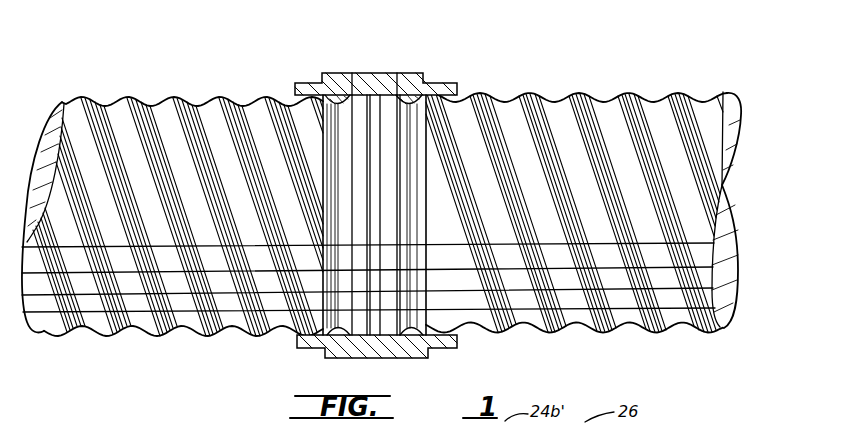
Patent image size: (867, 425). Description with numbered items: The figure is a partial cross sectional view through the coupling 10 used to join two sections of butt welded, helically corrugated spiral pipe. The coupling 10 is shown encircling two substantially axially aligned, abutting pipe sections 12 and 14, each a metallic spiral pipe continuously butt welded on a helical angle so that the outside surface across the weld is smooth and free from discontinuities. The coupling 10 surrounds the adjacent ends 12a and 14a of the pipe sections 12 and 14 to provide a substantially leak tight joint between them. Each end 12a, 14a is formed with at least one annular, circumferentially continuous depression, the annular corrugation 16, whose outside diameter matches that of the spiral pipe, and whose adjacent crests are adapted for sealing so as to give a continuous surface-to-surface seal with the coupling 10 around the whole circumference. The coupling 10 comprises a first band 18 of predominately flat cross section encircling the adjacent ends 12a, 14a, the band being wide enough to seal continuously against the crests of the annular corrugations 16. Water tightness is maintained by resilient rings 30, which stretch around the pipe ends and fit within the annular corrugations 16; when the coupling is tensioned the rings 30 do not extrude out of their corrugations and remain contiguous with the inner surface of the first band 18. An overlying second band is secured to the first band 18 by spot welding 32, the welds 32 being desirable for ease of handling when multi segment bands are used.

The coupling 10 is at (390, 56).
The pipe section 12 is at (117, 108).
The pipe end 12a is at (312, 132).
The pipe section 14 is at (603, 118).
The pipe end 14a is at (490, 95).
The annular corrugation 16 is at (342, 112).
The first band 18 is at (447, 132).
The resilient ring 30 is at (413, 336).
The spot weld 32 is at (396, 72).